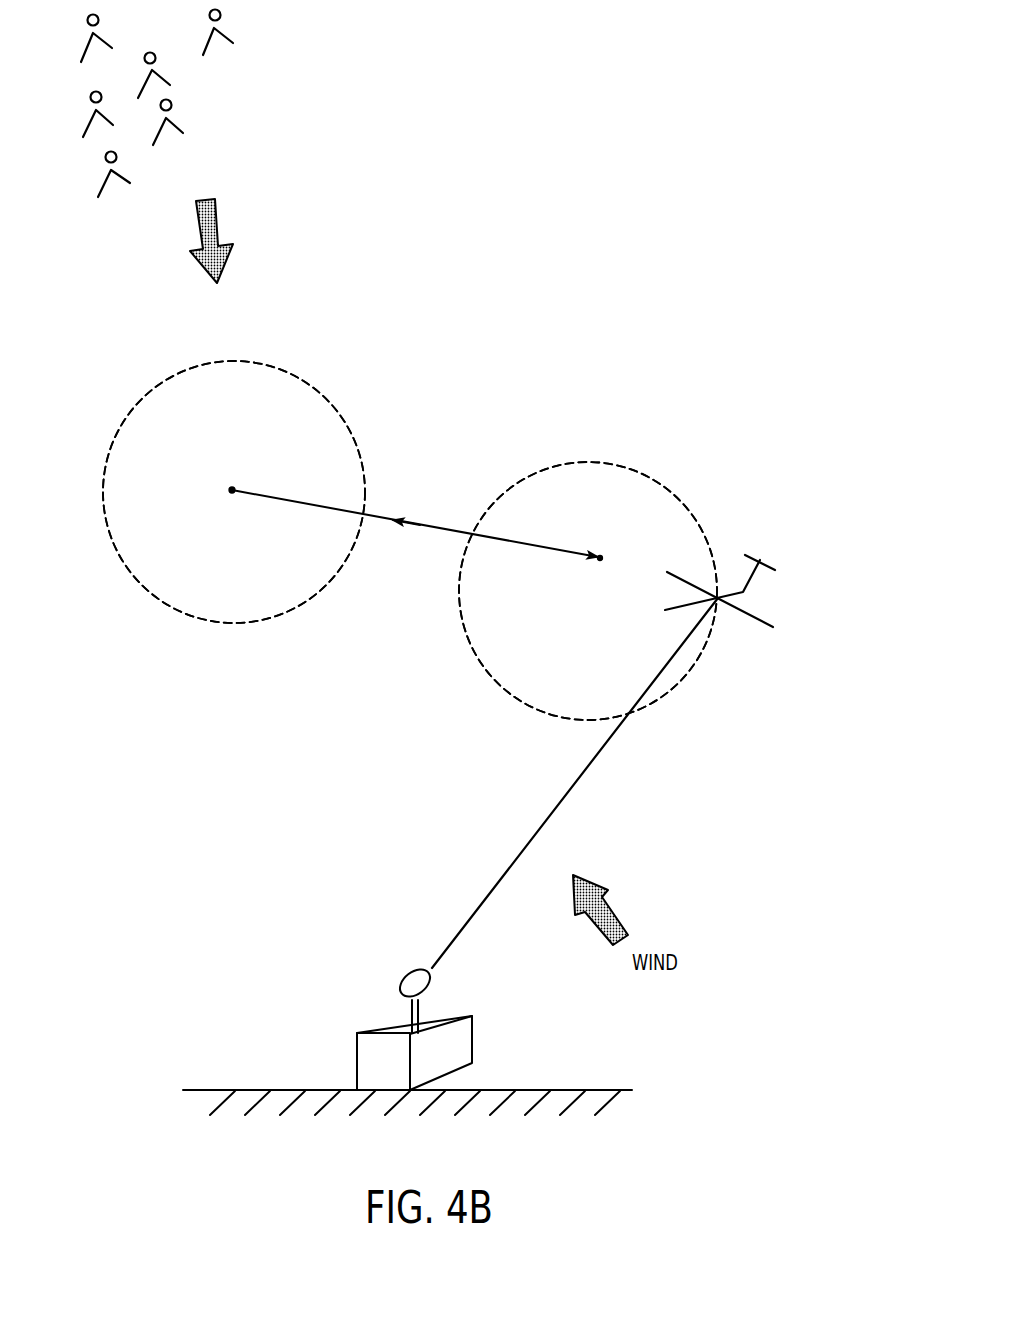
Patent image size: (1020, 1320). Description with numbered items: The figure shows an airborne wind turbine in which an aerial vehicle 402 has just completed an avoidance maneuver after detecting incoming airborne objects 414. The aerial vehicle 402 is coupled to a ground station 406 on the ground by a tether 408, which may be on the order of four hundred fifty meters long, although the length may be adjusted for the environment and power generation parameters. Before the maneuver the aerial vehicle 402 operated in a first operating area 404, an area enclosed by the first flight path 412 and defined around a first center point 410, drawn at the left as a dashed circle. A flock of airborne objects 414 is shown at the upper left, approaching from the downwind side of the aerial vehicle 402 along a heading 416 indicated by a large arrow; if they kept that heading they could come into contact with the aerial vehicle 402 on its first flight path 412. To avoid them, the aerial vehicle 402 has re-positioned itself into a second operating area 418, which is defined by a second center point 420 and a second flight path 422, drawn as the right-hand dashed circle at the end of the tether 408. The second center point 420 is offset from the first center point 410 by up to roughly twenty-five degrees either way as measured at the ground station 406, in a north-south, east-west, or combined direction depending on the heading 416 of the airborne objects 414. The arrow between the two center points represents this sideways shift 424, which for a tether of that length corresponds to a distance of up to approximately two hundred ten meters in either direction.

The aerial vehicle 402 is at (762, 573).
The first operating area 404 is at (135, 560).
The ground station 406 is at (473, 1040).
The tether 408 is at (555, 800).
The first center point 410 is at (229, 496).
The first flight path 412 is at (157, 388).
The airborne objects 414 is at (292, 52).
The heading 416 is at (219, 223).
The second operating area 418 is at (540, 688).
The second center point 420 is at (598, 563).
The second flight path 422 is at (698, 505).
The sideways shift 424 is at (402, 512).